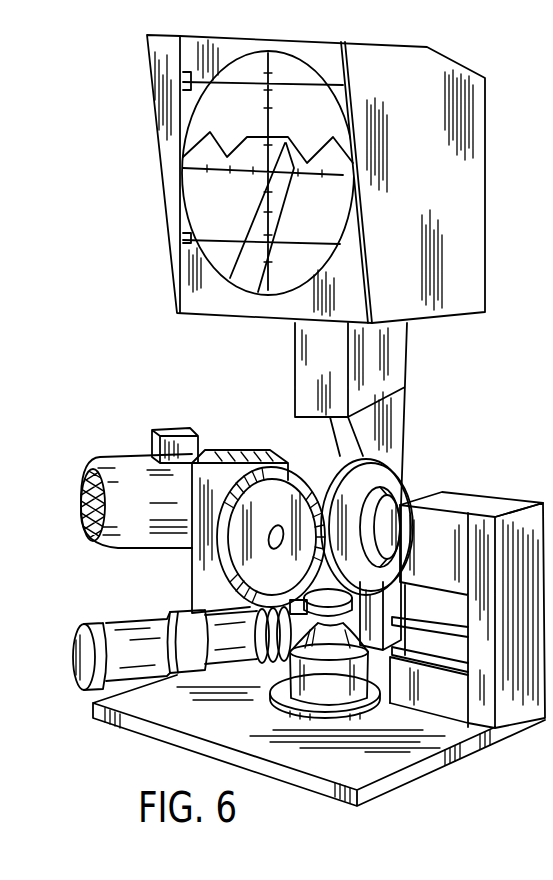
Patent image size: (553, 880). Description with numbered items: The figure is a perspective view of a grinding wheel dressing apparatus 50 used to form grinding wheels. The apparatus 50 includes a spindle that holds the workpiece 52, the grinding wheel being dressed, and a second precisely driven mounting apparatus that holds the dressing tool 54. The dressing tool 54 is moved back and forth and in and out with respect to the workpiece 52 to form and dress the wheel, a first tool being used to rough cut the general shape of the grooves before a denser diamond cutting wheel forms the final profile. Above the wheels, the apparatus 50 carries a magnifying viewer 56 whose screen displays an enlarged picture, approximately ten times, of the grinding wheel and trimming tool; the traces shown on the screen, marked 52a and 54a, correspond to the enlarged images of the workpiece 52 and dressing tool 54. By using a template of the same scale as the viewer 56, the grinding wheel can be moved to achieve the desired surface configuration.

The grinding wheel dressing apparatus 50 is at (309, 420).
The workpiece 52 is at (388, 472).
The sensor signal trace 52a is at (327, 124).
The dressing tool 54 is at (300, 474).
The disc signal trace 54a is at (248, 273).
The magnifying viewer 56 is at (307, 262).